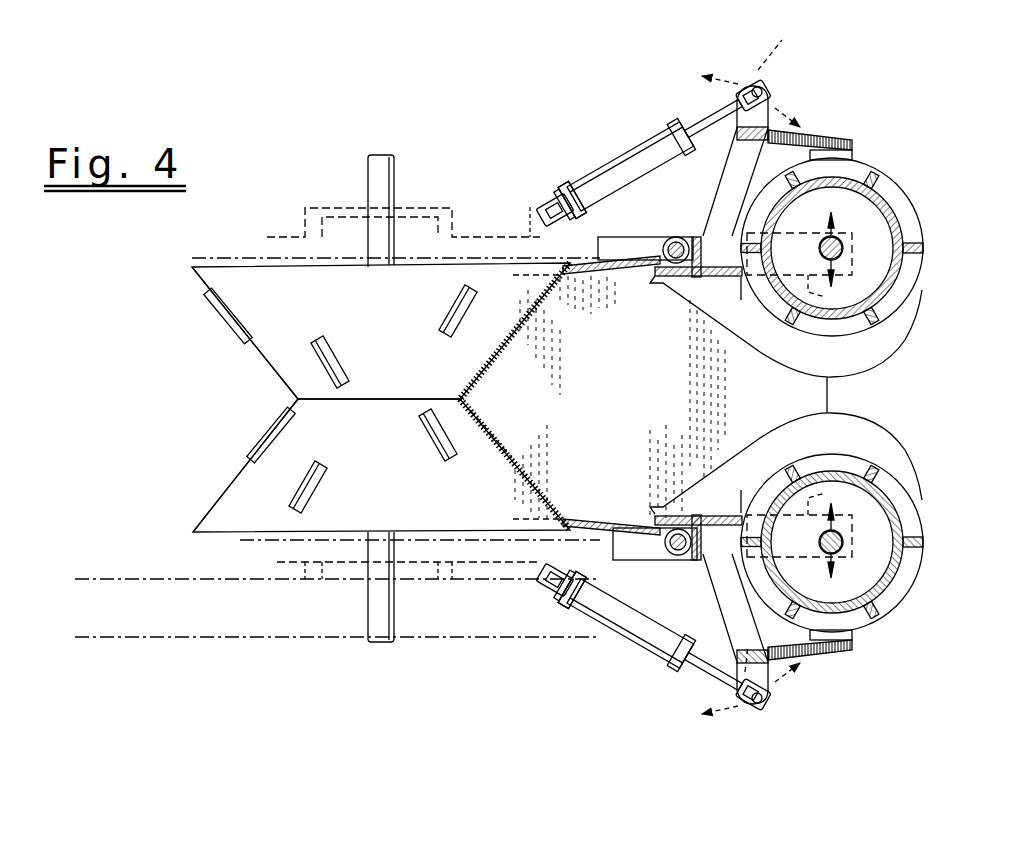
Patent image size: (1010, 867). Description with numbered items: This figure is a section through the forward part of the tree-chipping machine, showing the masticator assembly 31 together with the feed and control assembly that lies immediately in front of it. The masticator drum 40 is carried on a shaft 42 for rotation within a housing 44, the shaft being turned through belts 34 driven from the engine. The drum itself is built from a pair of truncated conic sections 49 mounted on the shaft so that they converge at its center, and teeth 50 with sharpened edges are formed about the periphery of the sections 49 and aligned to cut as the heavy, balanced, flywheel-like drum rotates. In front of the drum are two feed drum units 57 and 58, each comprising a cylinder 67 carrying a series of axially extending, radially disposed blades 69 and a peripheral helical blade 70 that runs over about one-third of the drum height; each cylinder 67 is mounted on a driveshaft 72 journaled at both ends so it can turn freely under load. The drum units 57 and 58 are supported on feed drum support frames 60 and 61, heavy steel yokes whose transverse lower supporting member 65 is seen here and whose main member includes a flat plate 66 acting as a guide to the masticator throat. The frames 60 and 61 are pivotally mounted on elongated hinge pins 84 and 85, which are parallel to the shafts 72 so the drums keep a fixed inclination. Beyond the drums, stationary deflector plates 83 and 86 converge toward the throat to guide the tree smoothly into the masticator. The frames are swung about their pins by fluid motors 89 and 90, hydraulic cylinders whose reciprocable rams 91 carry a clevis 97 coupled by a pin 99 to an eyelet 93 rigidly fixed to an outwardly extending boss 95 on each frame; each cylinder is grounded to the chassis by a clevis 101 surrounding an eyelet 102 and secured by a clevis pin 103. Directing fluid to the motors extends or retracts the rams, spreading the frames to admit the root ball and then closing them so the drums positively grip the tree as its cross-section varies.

The masticator assembly 31 is at (197, 558).
The belts 34 is at (277, 637).
The masticator drum 40 is at (249, 265).
The shaft 42 is at (370, 182).
The housing 44 is at (262, 542).
The truncated conic sections 49 is at (268, 366).
The teeth 50 is at (214, 337).
The feed drum unit 57 is at (935, 188).
The feed drum unit 58 is at (945, 495).
The feed drum support frame 60 is at (698, 216).
The feed drum support frame 61 is at (700, 578).
The lower supporting member 65 is at (870, 515).
The flat plate 66 is at (688, 288).
The cylinder 67 is at (905, 282).
The blades 69 is at (885, 182).
The helical blade 70 is at (826, 338).
The driveshaft 72 is at (845, 250).
The deflector plate 83 is at (612, 282).
The hinge pin 84 is at (678, 237).
The hinge pin 85 is at (670, 558).
The deflector plate 86 is at (672, 388).
The fluid motor 89 is at (612, 167).
The fluid motor 90 is at (612, 633).
The ram 91 is at (698, 125).
The eyelet 93 is at (762, 92).
The boss 95 is at (770, 100).
The clevis 97 is at (745, 86).
The pin 99 is at (767, 346).
The clevis 101 is at (558, 194).
The eyelet 102 is at (538, 216).
The clevis pin 103 is at (542, 205).